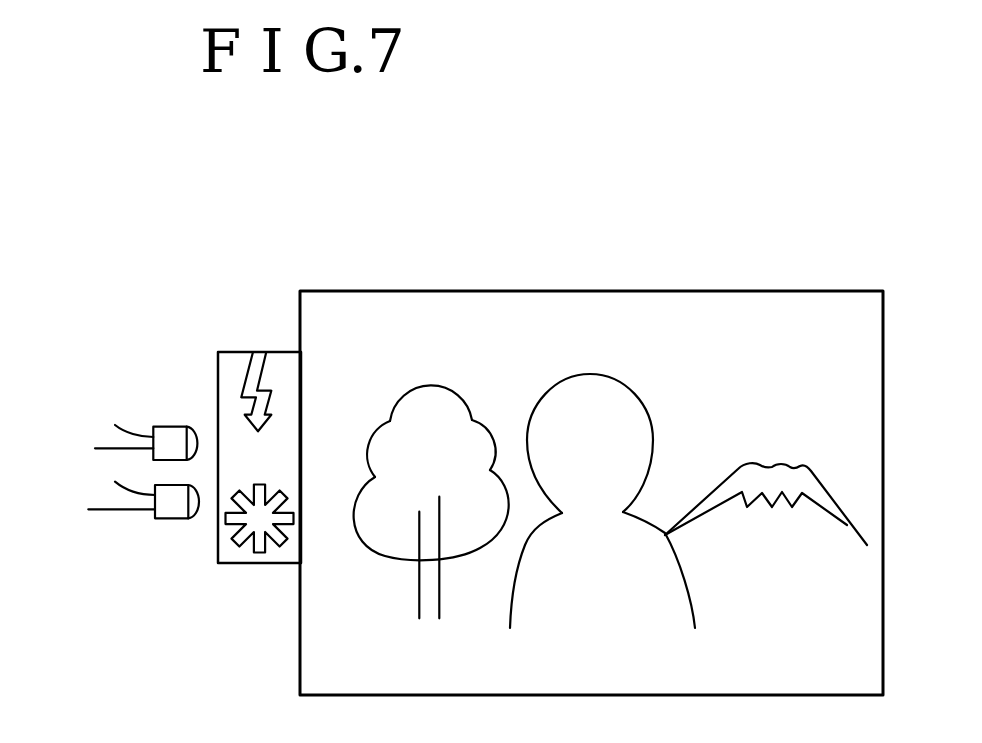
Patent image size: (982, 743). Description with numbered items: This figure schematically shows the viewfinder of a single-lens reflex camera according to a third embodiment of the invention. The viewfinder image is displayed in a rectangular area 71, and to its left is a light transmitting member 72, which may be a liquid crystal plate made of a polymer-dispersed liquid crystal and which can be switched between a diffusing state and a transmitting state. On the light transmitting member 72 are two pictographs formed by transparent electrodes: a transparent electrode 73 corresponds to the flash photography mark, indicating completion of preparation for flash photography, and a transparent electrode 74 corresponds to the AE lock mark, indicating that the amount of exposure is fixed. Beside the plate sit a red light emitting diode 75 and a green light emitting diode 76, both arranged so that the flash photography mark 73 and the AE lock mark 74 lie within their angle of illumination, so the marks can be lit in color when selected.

The area 71 is at (669, 291).
The light transmitting member 72 is at (282, 351).
The transparent electrode 73 is at (249, 365).
The transparent electrode 74 is at (235, 543).
The red light emitting diode 75 is at (115, 448).
The green light emitting diode 76 is at (115, 509).